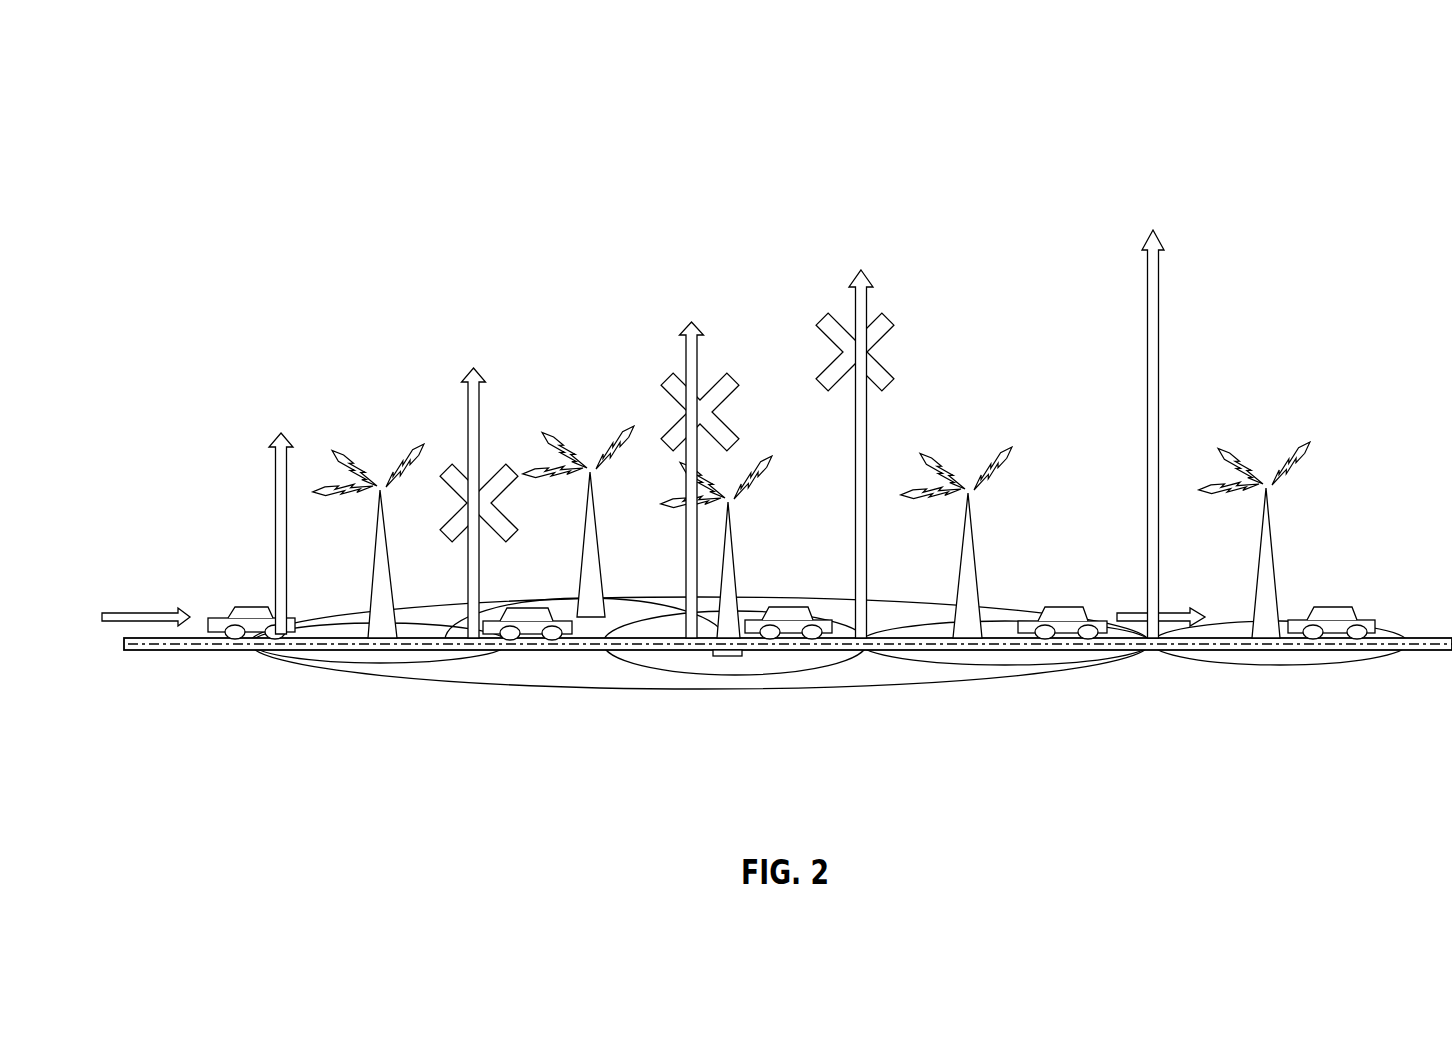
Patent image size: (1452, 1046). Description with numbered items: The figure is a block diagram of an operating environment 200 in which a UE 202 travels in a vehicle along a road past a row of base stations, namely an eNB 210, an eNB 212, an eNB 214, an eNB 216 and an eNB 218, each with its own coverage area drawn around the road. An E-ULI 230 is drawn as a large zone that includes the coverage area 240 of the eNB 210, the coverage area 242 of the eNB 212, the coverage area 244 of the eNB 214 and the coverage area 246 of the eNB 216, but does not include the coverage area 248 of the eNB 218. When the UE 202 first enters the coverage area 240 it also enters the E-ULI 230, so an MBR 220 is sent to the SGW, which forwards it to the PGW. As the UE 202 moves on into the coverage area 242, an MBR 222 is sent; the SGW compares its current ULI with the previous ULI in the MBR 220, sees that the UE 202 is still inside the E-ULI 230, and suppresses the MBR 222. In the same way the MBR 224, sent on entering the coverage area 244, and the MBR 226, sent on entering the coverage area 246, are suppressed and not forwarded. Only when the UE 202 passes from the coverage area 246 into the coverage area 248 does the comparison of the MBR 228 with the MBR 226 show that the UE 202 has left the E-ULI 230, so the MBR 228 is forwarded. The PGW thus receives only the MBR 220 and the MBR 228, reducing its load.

The operating environment 200 is at (185, 147).
The UE 202 is at (249, 592).
The eNB 210 is at (380, 461).
The eNB 212 is at (592, 430).
The eNB 214 is at (760, 447).
The eNB 216 is at (1024, 444).
The eNB 218 is at (1360, 479).
The MBR 220 is at (270, 413).
The MBR 222 is at (470, 353).
The MBR 224 is at (682, 283).
The MBR 226 is at (862, 251).
The MBR 228 is at (1151, 216).
The E-ULI 230 is at (629, 727).
The coverage area 240 is at (347, 631).
The coverage area 242 is at (655, 612).
The coverage area 244 is at (690, 659).
The coverage area 246 is at (925, 628).
The coverage area 248 is at (1233, 658).